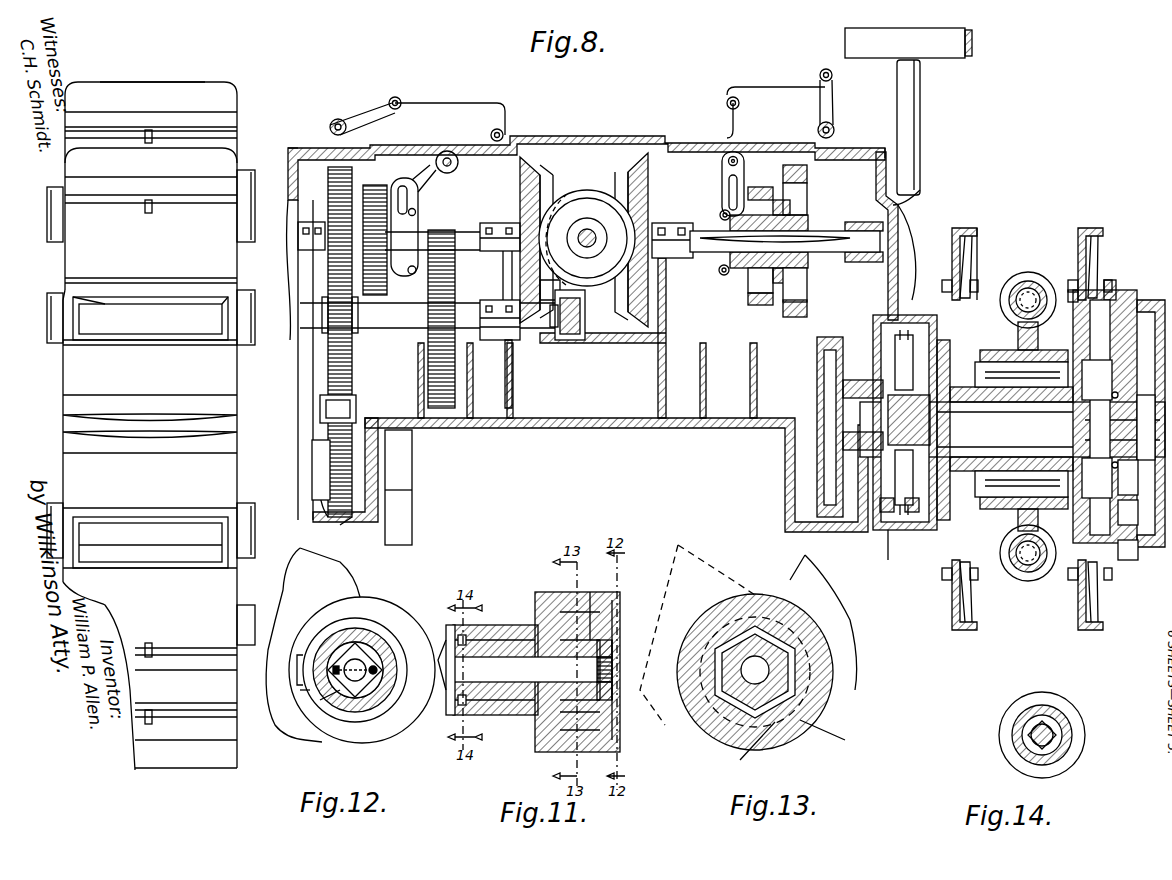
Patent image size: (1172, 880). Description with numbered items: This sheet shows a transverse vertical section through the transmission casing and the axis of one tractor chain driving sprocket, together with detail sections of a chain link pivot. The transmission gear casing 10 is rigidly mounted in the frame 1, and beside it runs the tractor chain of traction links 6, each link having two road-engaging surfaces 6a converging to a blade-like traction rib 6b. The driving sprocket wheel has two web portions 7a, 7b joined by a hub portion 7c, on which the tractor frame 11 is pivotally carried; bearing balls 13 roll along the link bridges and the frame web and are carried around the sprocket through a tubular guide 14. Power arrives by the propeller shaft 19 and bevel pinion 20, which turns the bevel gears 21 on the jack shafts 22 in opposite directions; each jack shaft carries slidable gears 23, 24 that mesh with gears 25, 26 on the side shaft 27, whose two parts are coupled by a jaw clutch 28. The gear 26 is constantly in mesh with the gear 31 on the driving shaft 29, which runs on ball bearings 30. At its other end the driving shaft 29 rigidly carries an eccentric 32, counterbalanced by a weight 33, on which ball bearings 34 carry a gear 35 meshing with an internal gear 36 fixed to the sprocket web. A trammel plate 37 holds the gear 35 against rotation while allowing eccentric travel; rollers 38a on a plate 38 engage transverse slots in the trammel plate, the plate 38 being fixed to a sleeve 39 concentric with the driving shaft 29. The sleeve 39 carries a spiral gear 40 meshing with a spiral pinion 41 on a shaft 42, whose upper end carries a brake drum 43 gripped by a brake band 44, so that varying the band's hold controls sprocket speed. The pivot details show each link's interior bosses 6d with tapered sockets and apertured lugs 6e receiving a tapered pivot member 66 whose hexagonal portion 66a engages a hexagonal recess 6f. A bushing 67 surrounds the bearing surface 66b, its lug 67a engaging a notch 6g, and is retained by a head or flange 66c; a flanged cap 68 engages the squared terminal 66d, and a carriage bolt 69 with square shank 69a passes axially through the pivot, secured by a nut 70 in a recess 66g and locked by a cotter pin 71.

In FIG. 8, the frame 1 is at (293, 146).
In FIG. 8, the traction links 6 is at (38, 392).
In FIG. 8, the road-engaging surfaces 6a is at (150, 454).
In FIG. 8, the traction rib 6b is at (195, 80).
In FIG. 11, the interior bosses 6d is at (510, 626).
In FIG. 14, the interior bosses 6d is at (999, 733).
In FIG. 12, the apertured lugs 6e is at (390, 730).
In FIG. 11, the hexagonal recess 6f is at (562, 625).
In FIG. 13, the hexagonal recess 6f is at (790, 718).
In FIG. 12, the notch 6g is at (298, 660).
In FIG. 8, the web portion 7a is at (972, 298).
In FIG. 8, the web portion 7b is at (1078, 300).
In FIG. 8, the hub portion 7c is at (996, 352).
In FIG. 8, the transmission gear casing 10 is at (625, 428).
In FIG. 8, the tractor frame 11 is at (1048, 345).
In FIG. 8, the bearing balls 13 is at (1040, 280).
In FIG. 8, the tubular guide 14 is at (1028, 272).
In FIG. 8, the propeller shaft 19 is at (587, 236).
In FIG. 8, the bevel pinion 20 is at (613, 228).
In FIG. 8, the bevel gears 21 is at (520, 178).
In FIG. 8, the jack shafts 22 is at (458, 230).
In FIG. 8, the slidable gear 23 is at (380, 182).
In FIG. 8, the slidable gear 24 is at (333, 150).
In FIG. 8, the gear 25 is at (452, 410).
In FIG. 8, the gear 26 is at (350, 372).
In FIG. 8, the side shaft 27 is at (398, 328).
In FIG. 8, the jaw clutch 28 is at (572, 340).
In FIG. 8, the driving shaft 29 is at (320, 410).
In FIG. 8, the ball bearings 30 is at (868, 525).
In FIG. 8, the gear 31 is at (325, 470).
In FIG. 8, the eccentric 32 is at (1012, 429).
In FIG. 8, the weight 33 is at (1138, 298).
In FIG. 8, the ball bearings 34 is at (1138, 477).
In FIG. 8, the gear 35 is at (1139, 509).
In FIG. 8, the internal gear 36 is at (1130, 552).
In FIG. 8, the trammel plate 37 is at (1078, 580).
In FIG. 8, the plate 38 is at (1103, 270).
In FIG. 8, the rollers 38a is at (1110, 285).
In FIG. 8, the sleeve 39 is at (1011, 429).
In FIG. 8, the spiral gear 40 is at (886, 533).
In FIG. 8, the spiral pinion 41 is at (916, 533).
In FIG. 8, the shaft 42 is at (920, 104).
In FIG. 8, the brake drum 43 is at (905, 43).
In FIG. 8, the brake band 44 is at (974, 44).
In FIG. 11, the pivot member 66 is at (525, 745).
In FIG. 13, the pivot member 66 is at (738, 695).
In FIG. 14, the pivot member 66 is at (1028, 750).
In FIG. 11, the hexagonal portion 66a is at (618, 702).
In FIG. 13, the hexagonal portion 66a is at (795, 674).
In FIG. 12, the bearing surface 66b is at (330, 705).
In FIG. 11, the bearing surface 66b is at (618, 748).
In FIG. 11, the head or flange 66c is at (620, 616).
In FIG. 11, the squared terminal 66d is at (520, 706).
In FIG. 14, the squared terminal 66d is at (1025, 716).
In FIG. 12, the recess 66g is at (372, 650).
In FIG. 11, the recess 66g is at (614, 684).
In FIG. 12, the bushing 67 is at (333, 630).
In FIG. 11, the bushing 67 is at (620, 605).
In FIG. 12, the lug 67a is at (325, 688).
In FIG. 11, the flanged cap 68 is at (450, 706).
In FIG. 12, the carriage bolt 69 is at (350, 700).
In FIG. 11, the carriage bolt 69 is at (545, 727).
In FIG. 13, the carriage bolt 69 is at (762, 662).
In FIG. 14, the carriage bolt 69 is at (1058, 750).
In FIG. 11, the square shank 69a is at (468, 674).
In FIG. 14, the square shank 69a is at (1062, 716).
In FIG. 12, the nut 70 is at (366, 628).
In FIG. 11, the nut 70 is at (612, 644).
In FIG. 12, the cotter pin 71 is at (380, 680).
In FIG. 11, the cotter pin 71 is at (614, 664).